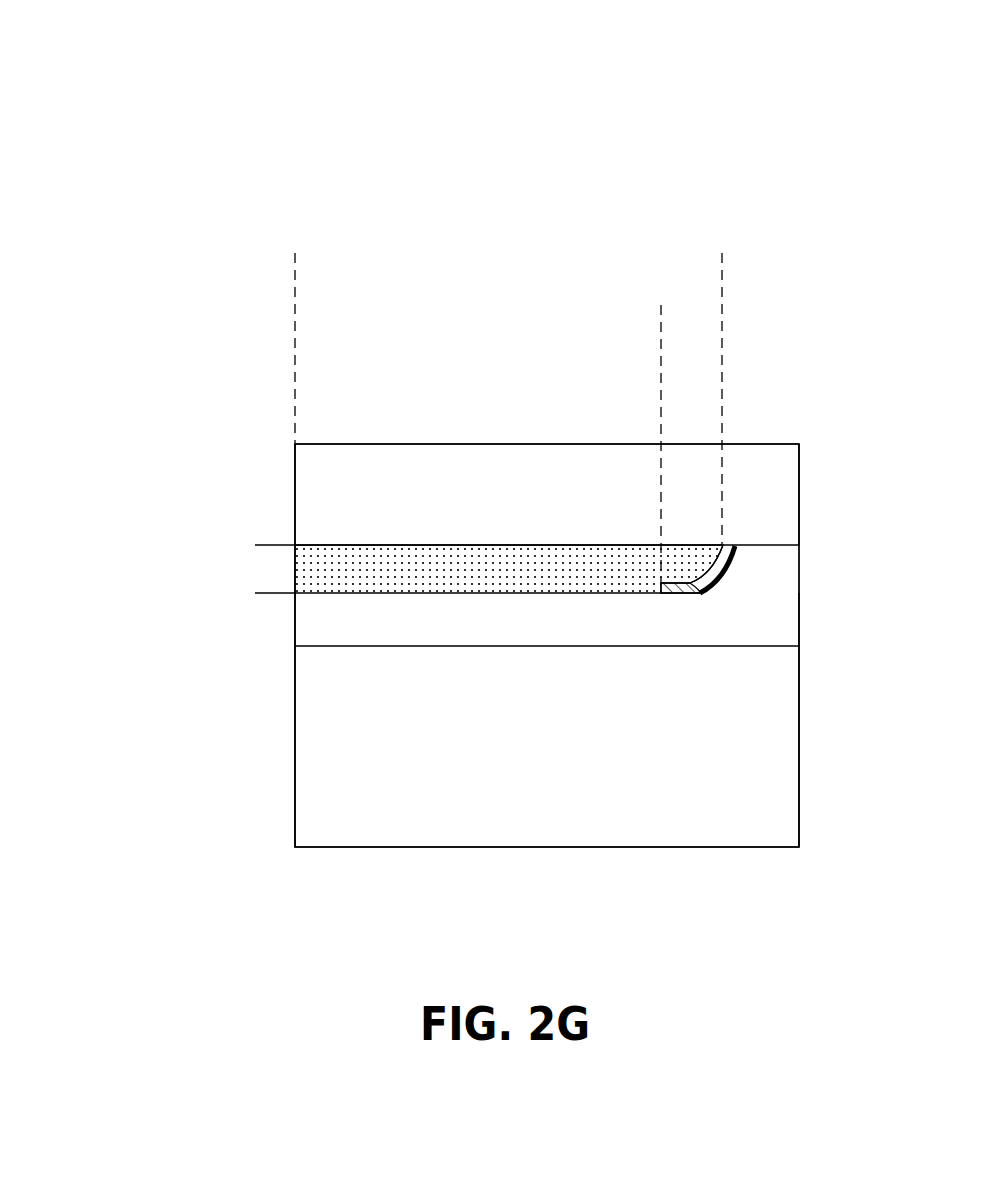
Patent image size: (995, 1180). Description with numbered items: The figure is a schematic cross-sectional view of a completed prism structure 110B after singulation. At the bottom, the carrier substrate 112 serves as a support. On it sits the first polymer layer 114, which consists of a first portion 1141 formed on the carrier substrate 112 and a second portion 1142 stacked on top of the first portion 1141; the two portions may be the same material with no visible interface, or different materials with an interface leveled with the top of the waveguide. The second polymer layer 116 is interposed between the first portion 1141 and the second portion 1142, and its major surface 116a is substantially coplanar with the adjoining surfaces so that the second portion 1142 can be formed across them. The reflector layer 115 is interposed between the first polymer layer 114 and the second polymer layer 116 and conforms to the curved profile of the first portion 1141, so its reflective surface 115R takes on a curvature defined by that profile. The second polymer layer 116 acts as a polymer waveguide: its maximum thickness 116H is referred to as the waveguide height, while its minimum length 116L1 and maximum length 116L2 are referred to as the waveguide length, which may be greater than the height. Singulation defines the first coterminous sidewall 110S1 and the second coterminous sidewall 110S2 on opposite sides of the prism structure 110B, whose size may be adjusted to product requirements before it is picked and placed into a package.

The prism structure 110B is at (905, 964).
The carrier substrate 112 is at (337, 797).
The first polymer layer 114 is at (464, 345).
The first portion of the first polymer layer 1141 is at (335, 630).
The second portion of the first polymer layer 1142 is at (352, 467).
The reflector layer 115 is at (732, 566).
The reflective surface of the reflector layer 115R is at (703, 568).
The second polymer layer 116 is at (330, 557).
The major surface of the second polymer layer 116a is at (512, 536).
The maximum thickness of the second polymer layer 116H is at (264, 547).
The minimum length of the second polymer layer 116L1 is at (659, 338).
The maximum length of the second polymer layer 116L2 is at (720, 277).
The first coterminous sidewall 110S1 is at (286, 708).
The second coterminous sidewall 110S2 is at (809, 696).